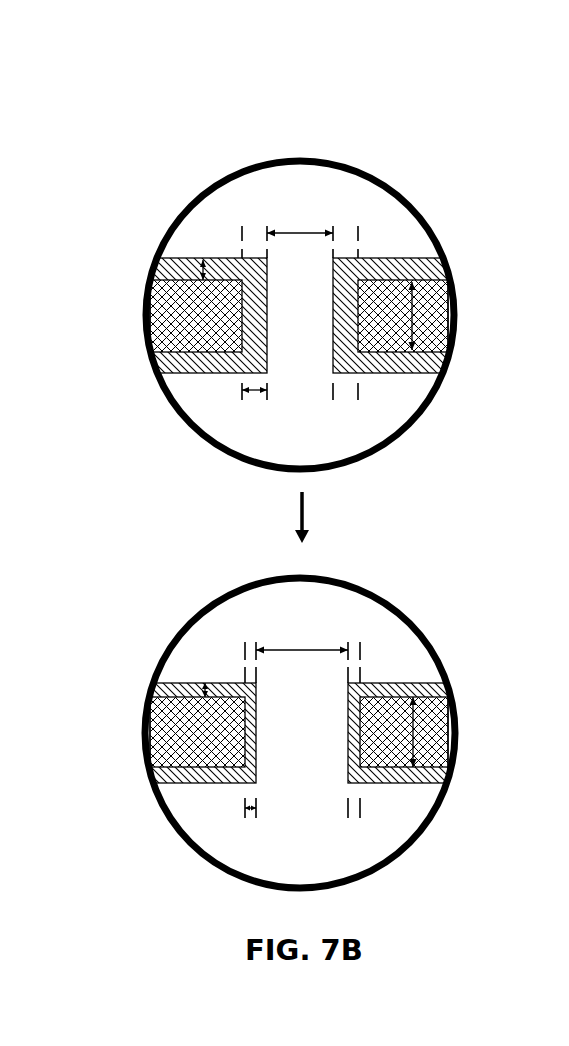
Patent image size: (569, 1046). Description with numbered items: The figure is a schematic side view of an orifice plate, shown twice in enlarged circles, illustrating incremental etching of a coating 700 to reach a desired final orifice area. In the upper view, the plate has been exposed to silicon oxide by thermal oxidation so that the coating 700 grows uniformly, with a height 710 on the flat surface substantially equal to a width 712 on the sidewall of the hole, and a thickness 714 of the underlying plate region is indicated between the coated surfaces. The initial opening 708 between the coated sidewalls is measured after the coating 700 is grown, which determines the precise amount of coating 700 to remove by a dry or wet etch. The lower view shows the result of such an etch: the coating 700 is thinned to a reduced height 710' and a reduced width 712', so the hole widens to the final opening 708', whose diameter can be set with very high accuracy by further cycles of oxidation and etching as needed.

The coating 700 is at (433, 269).
The initial opening 708 is at (313, 140).
The height 710 is at (138, 292).
The core layer thickness 714 is at (412, 322).
The width 712 is at (227, 445).
The final opening 708' is at (332, 589).
The reduced top layer thickness 710' is at (146, 711).
The reduced sidewall layer width 712' is at (222, 865).